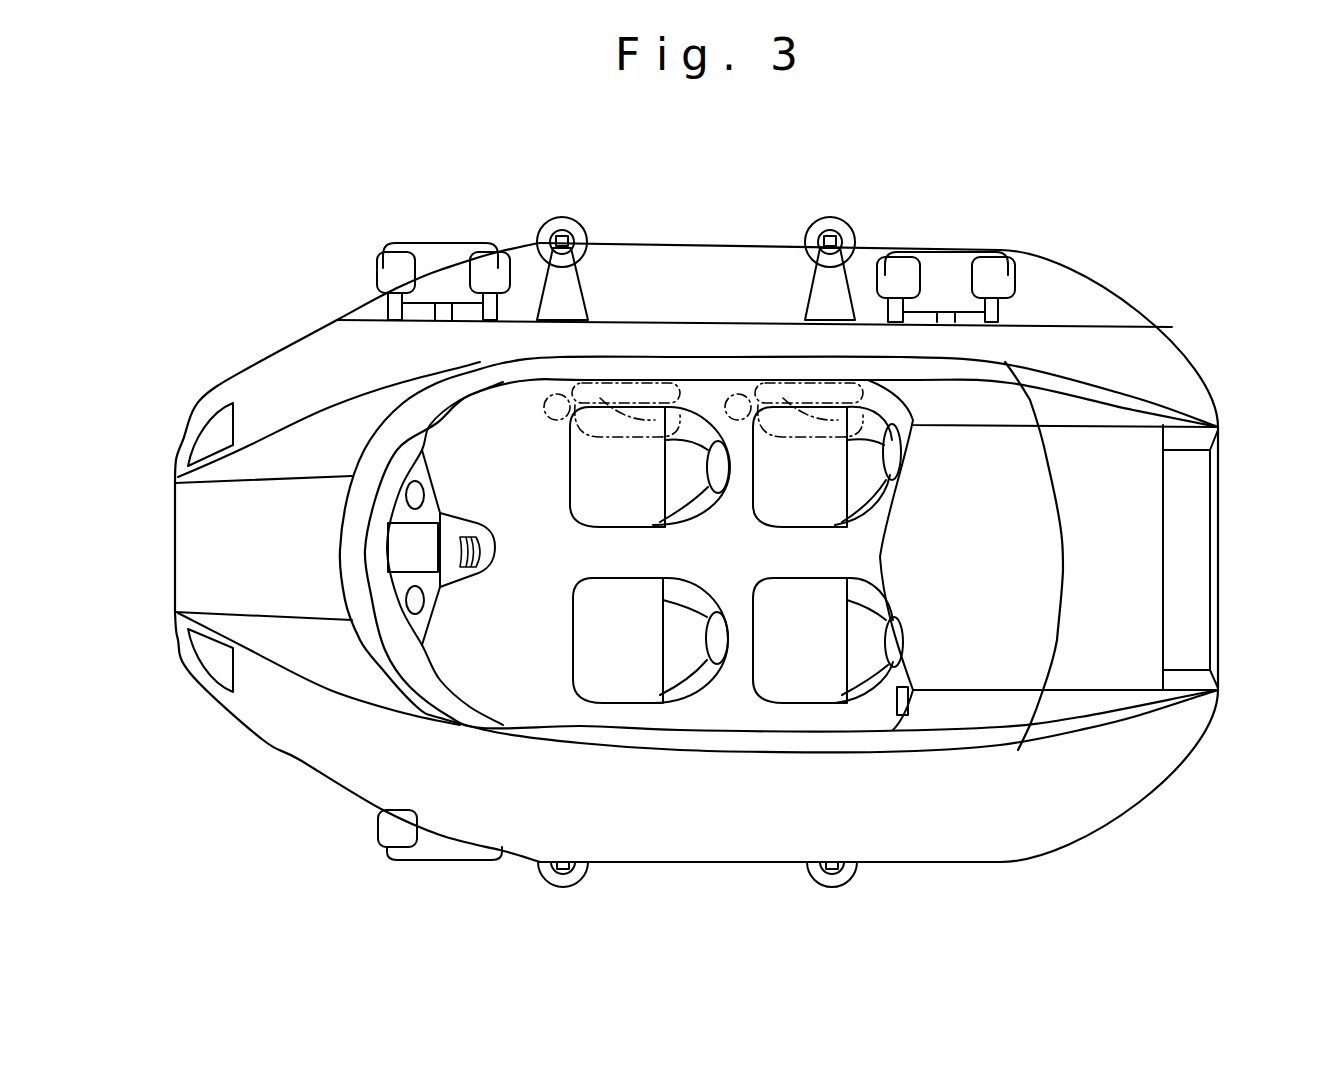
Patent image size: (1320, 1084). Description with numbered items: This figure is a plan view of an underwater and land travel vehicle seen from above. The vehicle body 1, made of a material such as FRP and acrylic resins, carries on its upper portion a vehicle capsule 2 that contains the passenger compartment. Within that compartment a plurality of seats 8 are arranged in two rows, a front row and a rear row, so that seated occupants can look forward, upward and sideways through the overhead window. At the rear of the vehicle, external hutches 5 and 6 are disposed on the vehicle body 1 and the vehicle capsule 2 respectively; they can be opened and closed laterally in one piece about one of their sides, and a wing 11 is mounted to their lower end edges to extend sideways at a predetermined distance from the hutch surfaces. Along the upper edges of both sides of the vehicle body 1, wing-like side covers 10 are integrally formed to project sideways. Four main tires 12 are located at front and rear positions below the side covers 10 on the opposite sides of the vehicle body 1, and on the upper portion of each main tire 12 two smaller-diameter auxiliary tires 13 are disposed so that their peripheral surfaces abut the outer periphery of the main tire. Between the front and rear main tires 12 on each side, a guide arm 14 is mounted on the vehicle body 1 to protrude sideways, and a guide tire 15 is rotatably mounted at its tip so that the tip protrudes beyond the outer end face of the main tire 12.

The vehicle body 1 is at (187, 545).
The vehicle capsule 2 is at (687, 370).
The external hutch 5 is at (1152, 497).
The external hutch 6 is at (1015, 663).
The seat 8 is at (580, 473).
The side cover 10 is at (653, 250).
The wing 11 is at (1196, 572).
The main tire 12 is at (443, 248).
The auxiliary tire 13 is at (500, 262).
The guide arm 14 is at (817, 302).
The guide tire 15 is at (832, 230).